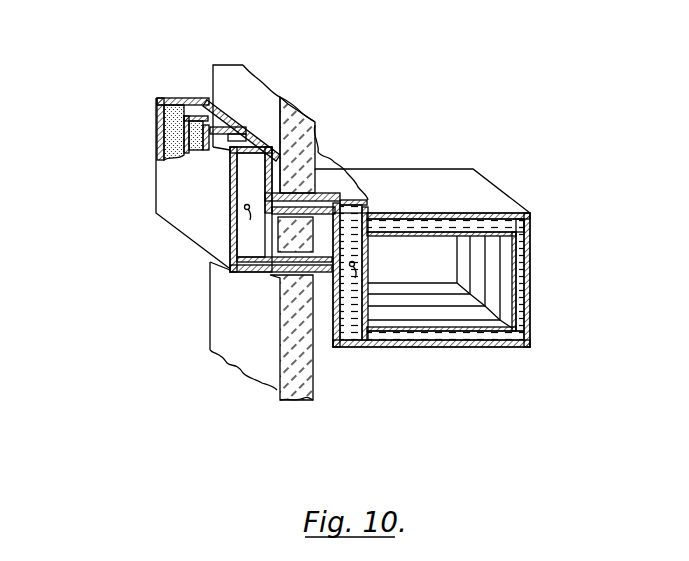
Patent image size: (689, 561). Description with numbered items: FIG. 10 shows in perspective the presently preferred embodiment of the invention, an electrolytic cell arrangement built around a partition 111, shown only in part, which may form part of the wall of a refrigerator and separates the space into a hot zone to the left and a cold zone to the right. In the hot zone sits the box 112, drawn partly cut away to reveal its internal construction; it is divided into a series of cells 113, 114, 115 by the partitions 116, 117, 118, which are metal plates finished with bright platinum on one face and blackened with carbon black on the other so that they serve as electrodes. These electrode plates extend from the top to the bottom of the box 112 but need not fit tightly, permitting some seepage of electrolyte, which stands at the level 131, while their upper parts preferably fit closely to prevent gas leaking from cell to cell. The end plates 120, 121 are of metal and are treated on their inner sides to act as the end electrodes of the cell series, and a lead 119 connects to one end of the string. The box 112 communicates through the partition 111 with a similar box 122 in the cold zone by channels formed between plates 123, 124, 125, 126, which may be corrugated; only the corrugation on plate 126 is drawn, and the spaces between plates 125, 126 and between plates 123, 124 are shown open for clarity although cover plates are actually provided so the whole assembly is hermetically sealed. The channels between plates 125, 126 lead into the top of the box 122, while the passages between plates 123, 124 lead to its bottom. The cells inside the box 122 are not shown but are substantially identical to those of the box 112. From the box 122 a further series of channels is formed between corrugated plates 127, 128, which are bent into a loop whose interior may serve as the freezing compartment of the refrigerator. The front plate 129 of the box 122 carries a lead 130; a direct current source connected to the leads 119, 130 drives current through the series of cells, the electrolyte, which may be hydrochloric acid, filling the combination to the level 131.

The partition 111 is at (313, 122).
The box 112 is at (190, 232).
The cell 113 is at (170, 112).
The cell 114 is at (193, 130).
The cell 115 is at (220, 138).
The partition 116 is at (180, 97).
The partition 117 is at (212, 98).
The partition 118 is at (225, 122).
The lead 119 is at (244, 207).
The end plate 120 is at (247, 243).
The end plate 121 is at (157, 105).
The box 122 is at (347, 323).
The corrugated plate 123 is at (267, 283).
The corrugated plate 124 is at (273, 273).
The corrugated plate 125 is at (353, 205).
The corrugated plate 126 is at (340, 210).
The corrugated plate 127 is at (467, 343).
The corrugated plate 128 is at (493, 333).
The front plate 129 is at (357, 313).
The lead 130 is at (368, 266).
The level 131 is at (370, 200).